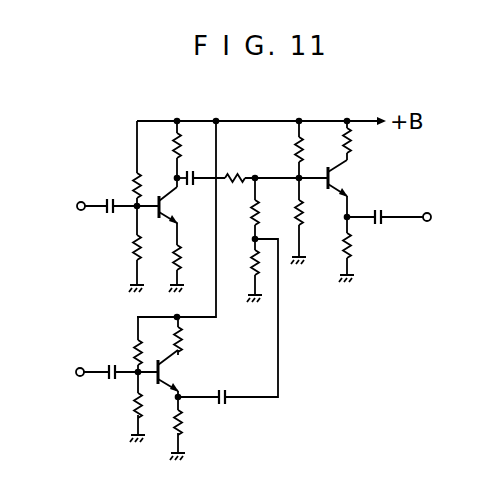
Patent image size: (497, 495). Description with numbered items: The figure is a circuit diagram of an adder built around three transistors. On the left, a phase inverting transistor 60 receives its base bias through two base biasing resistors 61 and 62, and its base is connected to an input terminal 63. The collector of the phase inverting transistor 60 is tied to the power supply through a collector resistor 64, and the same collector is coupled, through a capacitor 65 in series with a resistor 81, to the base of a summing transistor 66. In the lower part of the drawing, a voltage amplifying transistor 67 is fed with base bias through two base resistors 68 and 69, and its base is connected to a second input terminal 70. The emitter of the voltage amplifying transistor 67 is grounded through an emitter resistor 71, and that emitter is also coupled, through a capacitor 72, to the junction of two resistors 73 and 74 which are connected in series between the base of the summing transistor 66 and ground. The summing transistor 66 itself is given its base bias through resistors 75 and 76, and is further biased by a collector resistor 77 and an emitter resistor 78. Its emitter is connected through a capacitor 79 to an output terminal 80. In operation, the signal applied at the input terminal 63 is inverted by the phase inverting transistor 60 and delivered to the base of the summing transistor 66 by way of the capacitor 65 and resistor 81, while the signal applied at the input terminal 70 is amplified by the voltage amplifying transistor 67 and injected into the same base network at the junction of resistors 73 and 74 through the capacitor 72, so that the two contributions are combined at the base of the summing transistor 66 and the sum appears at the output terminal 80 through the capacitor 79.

The phase inverting transistor 60 is at (172, 203).
The base biasing resistor 61 is at (135, 183).
The base biasing resistor 62 is at (134, 243).
The input terminal 63 is at (82, 210).
The collector resistor 64 is at (181, 148).
The capacitor 65 is at (189, 170).
The summing transistor 66 is at (349, 176).
The voltage amplifying transistor 67 is at (170, 368).
The base resistor 68 is at (135, 358).
The base resistor 69 is at (134, 401).
The input terminal 70 is at (76, 372).
The emitter resistor 71 is at (182, 420).
The capacitor 72 is at (225, 405).
The resistor 73 is at (259, 206).
The resistor 74 is at (252, 265).
The resistor 75 is at (297, 146).
The resistor 76 is at (302, 212).
The collector resistor 77 is at (352, 138).
The emitter resistor 78 is at (352, 240).
The capacitor 79 is at (377, 209).
The output terminal 80 is at (431, 219).
The resistor 81 is at (241, 175).